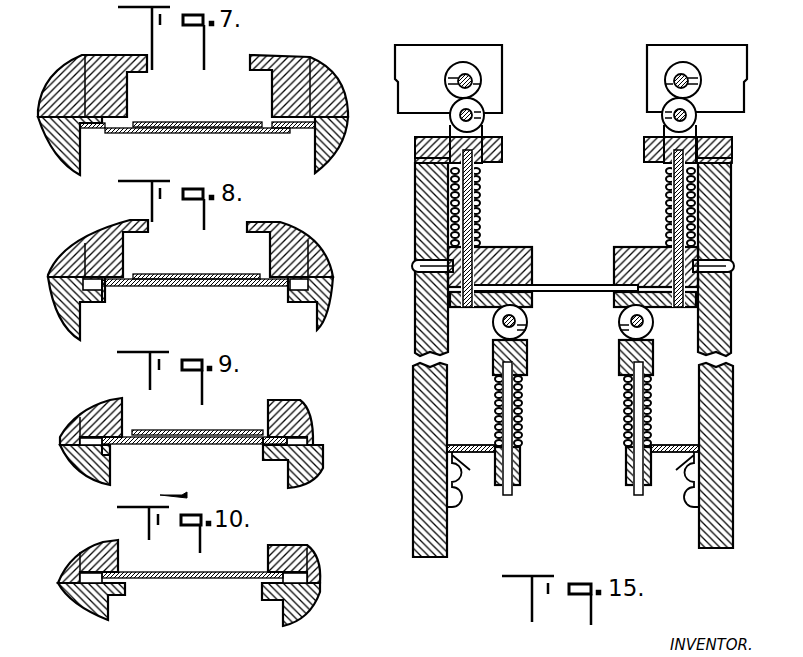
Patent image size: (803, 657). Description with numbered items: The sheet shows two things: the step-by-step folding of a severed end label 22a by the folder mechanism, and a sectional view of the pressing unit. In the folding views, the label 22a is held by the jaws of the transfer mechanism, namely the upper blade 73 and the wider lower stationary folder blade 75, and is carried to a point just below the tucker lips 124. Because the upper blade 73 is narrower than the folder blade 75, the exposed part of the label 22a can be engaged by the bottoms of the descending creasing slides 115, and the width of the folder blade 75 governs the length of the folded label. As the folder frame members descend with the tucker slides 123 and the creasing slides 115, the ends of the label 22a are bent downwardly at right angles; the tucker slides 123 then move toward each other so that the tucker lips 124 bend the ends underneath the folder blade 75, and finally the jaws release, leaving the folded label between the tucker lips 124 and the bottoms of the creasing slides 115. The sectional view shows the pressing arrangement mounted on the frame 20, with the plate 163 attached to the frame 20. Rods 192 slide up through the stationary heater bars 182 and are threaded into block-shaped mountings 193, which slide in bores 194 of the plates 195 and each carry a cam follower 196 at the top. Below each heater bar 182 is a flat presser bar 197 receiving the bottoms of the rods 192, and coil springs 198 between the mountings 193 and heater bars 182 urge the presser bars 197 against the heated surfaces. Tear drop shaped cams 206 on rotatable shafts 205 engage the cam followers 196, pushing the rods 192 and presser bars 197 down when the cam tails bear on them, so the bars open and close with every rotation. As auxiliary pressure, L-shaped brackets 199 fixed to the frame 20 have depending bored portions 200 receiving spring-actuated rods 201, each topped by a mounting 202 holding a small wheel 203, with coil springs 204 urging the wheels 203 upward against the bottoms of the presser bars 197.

In FIG. 15, the frame 20 is at (418, 479).
In FIG. 7, the end label 22a is at (96, 130).
In FIG. 8, the end label 22a is at (288, 291).
In FIG. 9, the end label 22a is at (264, 426).
In FIG. 10, the end label 22a is at (203, 580).
In FIG. 7, the blade 73 is at (245, 121).
In FIG. 8, the blade 73 is at (217, 274).
In FIG. 9, the blade 73 is at (231, 417).
In FIG. 7, the stationary folder blade 75 is at (279, 134).
In FIG. 8, the stationary folder blade 75 is at (232, 288).
In FIG. 9, the stationary folder blade 75 is at (218, 445).
In FIG. 7, the creasing slide 115 is at (272, 85).
In FIG. 8, the creasing slide 115 is at (116, 250).
In FIG. 9, the creasing slide 115 is at (122, 416).
In FIG. 10, the creasing slide 115 is at (119, 557).
In FIG. 7, the tucker slide 123 is at (72, 165).
In FIG. 8, the tucker slide 123 is at (75, 328).
In FIG. 9, the tucker slide 123 is at (90, 482).
In FIG. 10, the tucker slide 123 is at (94, 606).
In FIG. 7, the tucker lip 124 is at (103, 119).
In FIG. 8, the tucker lip 124 is at (93, 303).
In FIG. 9, the tucker lip 124 is at (111, 455).
In FIG. 10, the tucker lip 124 is at (124, 594).
In FIG. 15, the plate 163 is at (430, 225).
In FIG. 15, the heater bar 182 is at (522, 248).
In FIG. 15, the rod 192 is at (471, 196).
In FIG. 15, the block-shaped mounting 193 is at (501, 139).
In FIG. 15, the bore 194 is at (417, 158).
In FIG. 15, the plate 195 is at (417, 139).
In FIG. 15, the cam follower 196 is at (483, 108).
In FIG. 15, the presser bar 197 is at (485, 306).
In FIG. 15, the coil spring 198 is at (480, 213).
In FIG. 15, the L-shaped bracket 199 is at (657, 447).
In FIG. 15, the depending bored portion 200 is at (521, 478).
In FIG. 15, the spring-actuated rod 201 is at (630, 416).
In FIG. 15, the mounting 202 is at (618, 354).
In FIG. 15, the small wheel 203 is at (620, 319).
In FIG. 15, the coil spring 204 is at (621, 388).
In FIG. 15, the rotatable shaft 205 is at (472, 80).
In FIG. 15, the tear drop shaped cam 206 is at (456, 76).